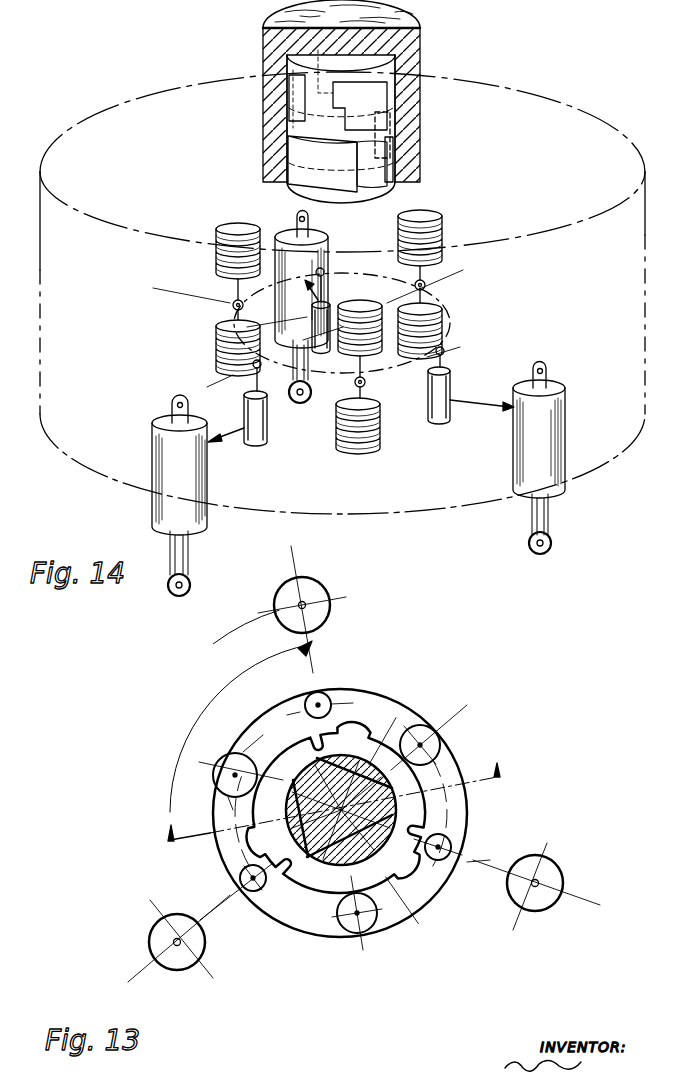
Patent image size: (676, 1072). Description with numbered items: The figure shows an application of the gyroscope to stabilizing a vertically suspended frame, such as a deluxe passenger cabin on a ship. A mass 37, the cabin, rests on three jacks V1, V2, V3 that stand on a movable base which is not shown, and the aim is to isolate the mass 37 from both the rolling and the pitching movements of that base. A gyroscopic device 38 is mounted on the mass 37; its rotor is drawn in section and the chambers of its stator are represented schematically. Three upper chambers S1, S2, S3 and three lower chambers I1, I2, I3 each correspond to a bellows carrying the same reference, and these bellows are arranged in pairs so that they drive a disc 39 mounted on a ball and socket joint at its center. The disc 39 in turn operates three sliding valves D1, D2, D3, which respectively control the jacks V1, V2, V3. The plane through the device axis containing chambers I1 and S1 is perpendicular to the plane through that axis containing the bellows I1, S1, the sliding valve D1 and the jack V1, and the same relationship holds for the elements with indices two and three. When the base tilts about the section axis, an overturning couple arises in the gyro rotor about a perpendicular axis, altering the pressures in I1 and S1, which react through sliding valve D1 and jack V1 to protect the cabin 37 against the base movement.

In FIG. 14, the mass 37 is at (42, 292).
In FIG. 14, the gyroscopic device 38 is at (264, 51).
In FIG. 13, the gyroscopic device 38 is at (298, 781).
In FIG. 14, the disc 39 is at (440, 312).
In FIG. 13, the disc 39 is at (407, 722).
In FIG. 14, the upper chamber / bellows S1 is at (290, 106).
In FIG. 13, the upper chamber / bellows S1 is at (288, 808).
In FIG. 14, the upper chamber / bellows S2 is at (395, 118).
In FIG. 13, the upper chamber / bellows S2 is at (366, 852).
In FIG. 14, the upper chamber / bellows S3 is at (390, 70).
In FIG. 13, the upper chamber / bellows S3 is at (362, 768).
In FIG. 14, the lower chamber / bellows I1 is at (392, 153).
In FIG. 14, the lower chamber / bellows I2 is at (278, 136).
In FIG. 14, the lower chamber / bellows I3 is at (342, 186).
In FIG. 14, the jack V1 is at (289, 232).
In FIG. 13, the jack V1 is at (320, 592).
In FIG. 14, the jack V2 is at (151, 510).
In FIG. 13, the jack V2 is at (146, 942).
In FIG. 14, the jack V3 is at (566, 478).
In FIG. 13, the jack V3 is at (540, 910).
In FIG. 14, the sliding valve D1 is at (310, 360).
In FIG. 13, the sliding valve D1 is at (324, 700).
In FIG. 14, the sliding valve D2 is at (267, 432).
In FIG. 13, the sliding valve D2 is at (247, 890).
In FIG. 14, the sliding valve D3 is at (452, 402).
In FIG. 13, the sliding valve D3 is at (451, 845).